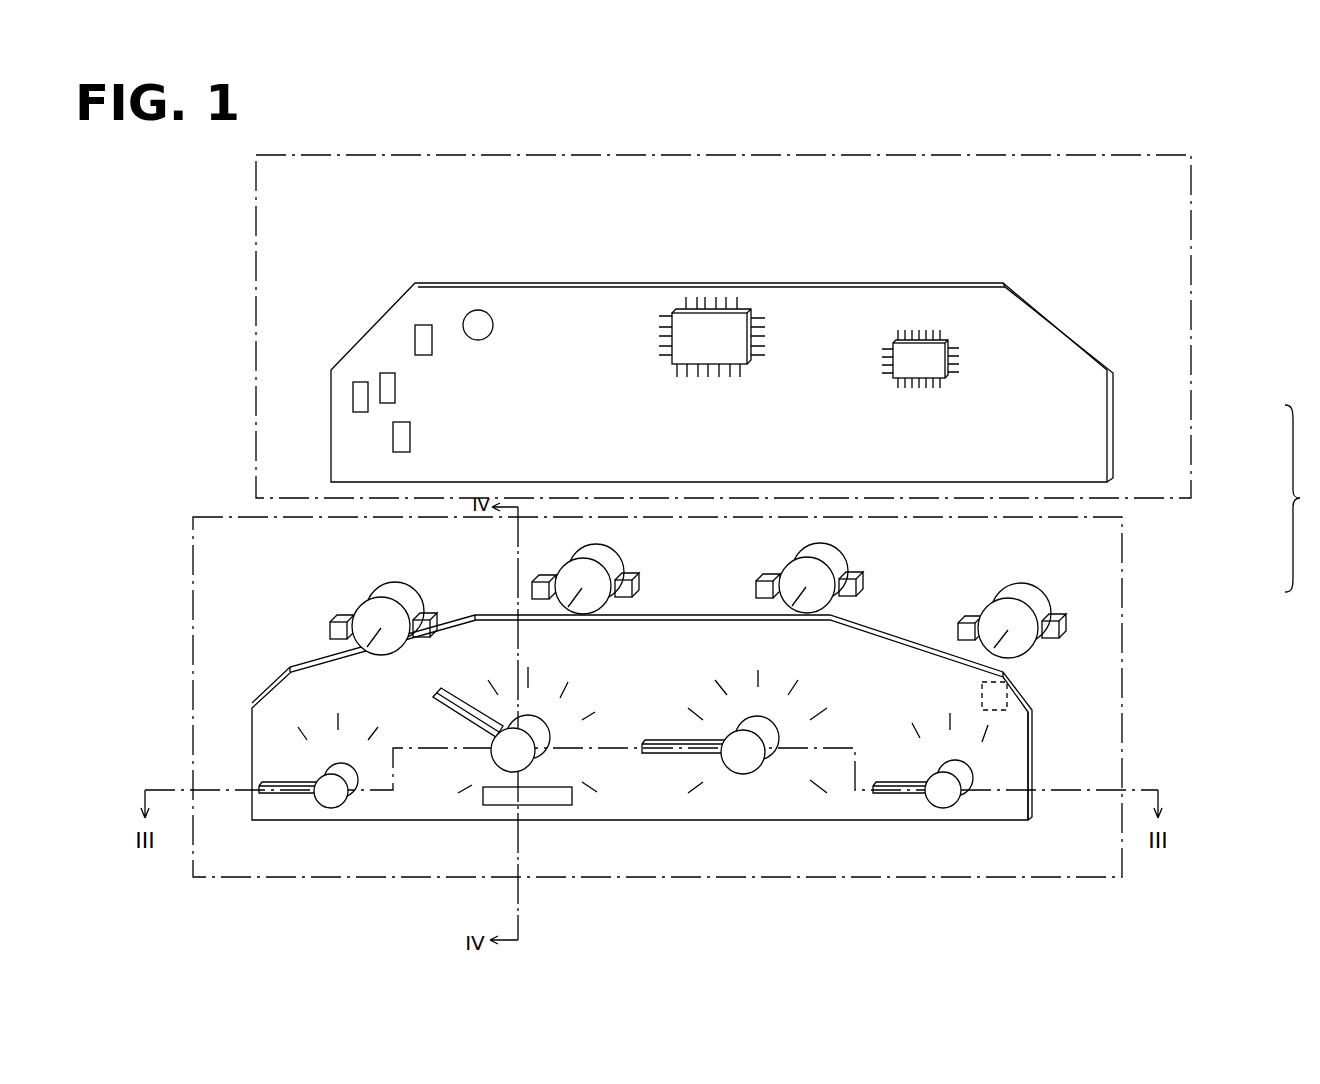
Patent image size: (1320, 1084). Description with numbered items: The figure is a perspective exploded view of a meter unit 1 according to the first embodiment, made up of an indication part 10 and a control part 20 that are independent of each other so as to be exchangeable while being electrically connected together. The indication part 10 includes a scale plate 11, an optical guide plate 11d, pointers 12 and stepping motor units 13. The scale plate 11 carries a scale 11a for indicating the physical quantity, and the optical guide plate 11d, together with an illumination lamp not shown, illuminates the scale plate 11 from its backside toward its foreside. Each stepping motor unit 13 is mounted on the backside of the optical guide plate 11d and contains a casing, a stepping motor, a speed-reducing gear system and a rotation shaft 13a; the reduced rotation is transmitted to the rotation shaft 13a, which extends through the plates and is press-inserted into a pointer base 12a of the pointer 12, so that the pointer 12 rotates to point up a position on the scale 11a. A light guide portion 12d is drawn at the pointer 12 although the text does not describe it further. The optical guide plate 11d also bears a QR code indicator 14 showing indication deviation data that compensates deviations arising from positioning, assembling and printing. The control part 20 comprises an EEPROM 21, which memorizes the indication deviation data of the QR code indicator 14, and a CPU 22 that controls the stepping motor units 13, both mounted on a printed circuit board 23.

The meter unit 1 is at (1302, 498).
The indication part 10 is at (1124, 588).
The scale plate 11 is at (1010, 803).
The scale 11a is at (300, 733).
The optical guide plate 11d is at (1036, 775).
The pointer 12 is at (616, 803).
The pointer base 12a is at (513, 763).
The lamp light guide portion 12d is at (333, 797).
The stepping motor unit 13 is at (390, 588).
The rotation shaft 13a is at (1020, 662).
The QR code indicator 14 is at (997, 710).
The control part 20 is at (1192, 442).
The EEPROM 21 is at (927, 357).
The CPU 22 is at (703, 335).
The printed circuit board 23 is at (1047, 369).